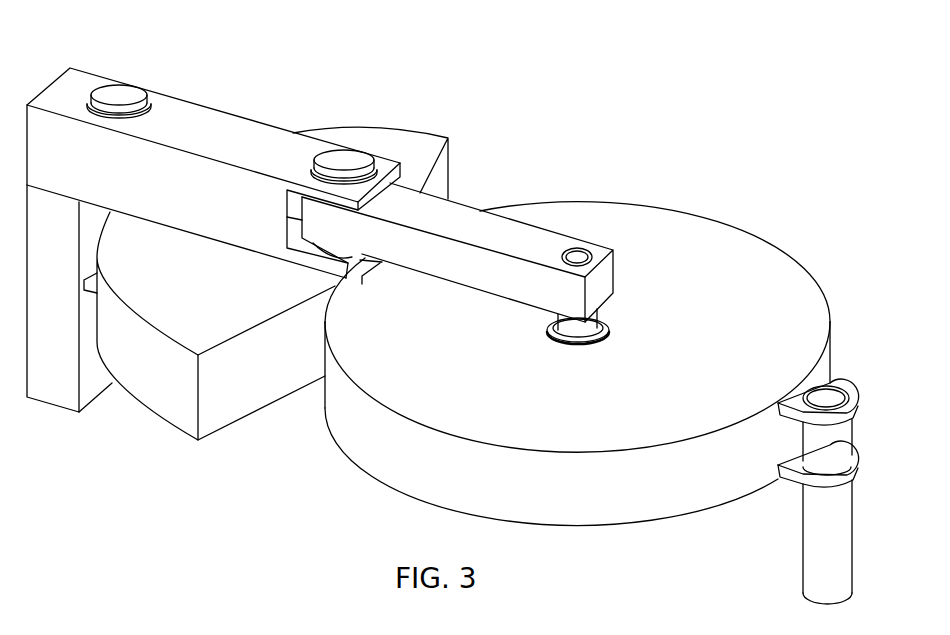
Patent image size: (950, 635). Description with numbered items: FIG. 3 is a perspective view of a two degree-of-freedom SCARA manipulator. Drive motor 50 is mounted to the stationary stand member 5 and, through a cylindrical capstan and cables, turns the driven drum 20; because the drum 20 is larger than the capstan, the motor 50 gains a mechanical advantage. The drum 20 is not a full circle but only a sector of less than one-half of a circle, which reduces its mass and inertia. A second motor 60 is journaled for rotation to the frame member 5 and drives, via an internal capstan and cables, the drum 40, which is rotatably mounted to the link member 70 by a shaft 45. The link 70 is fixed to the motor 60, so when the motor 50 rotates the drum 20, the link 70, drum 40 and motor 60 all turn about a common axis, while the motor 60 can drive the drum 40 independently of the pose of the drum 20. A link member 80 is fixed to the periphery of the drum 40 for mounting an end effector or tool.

The stationary stand member 5 is at (210, 122).
The driven drum 20 is at (182, 412).
The drum 40 is at (755, 237).
The shaft 45 is at (563, 327).
The drive motor 50 is at (123, 93).
The motor 60 is at (348, 157).
The link member 70 is at (452, 215).
The link member 80 is at (812, 508).